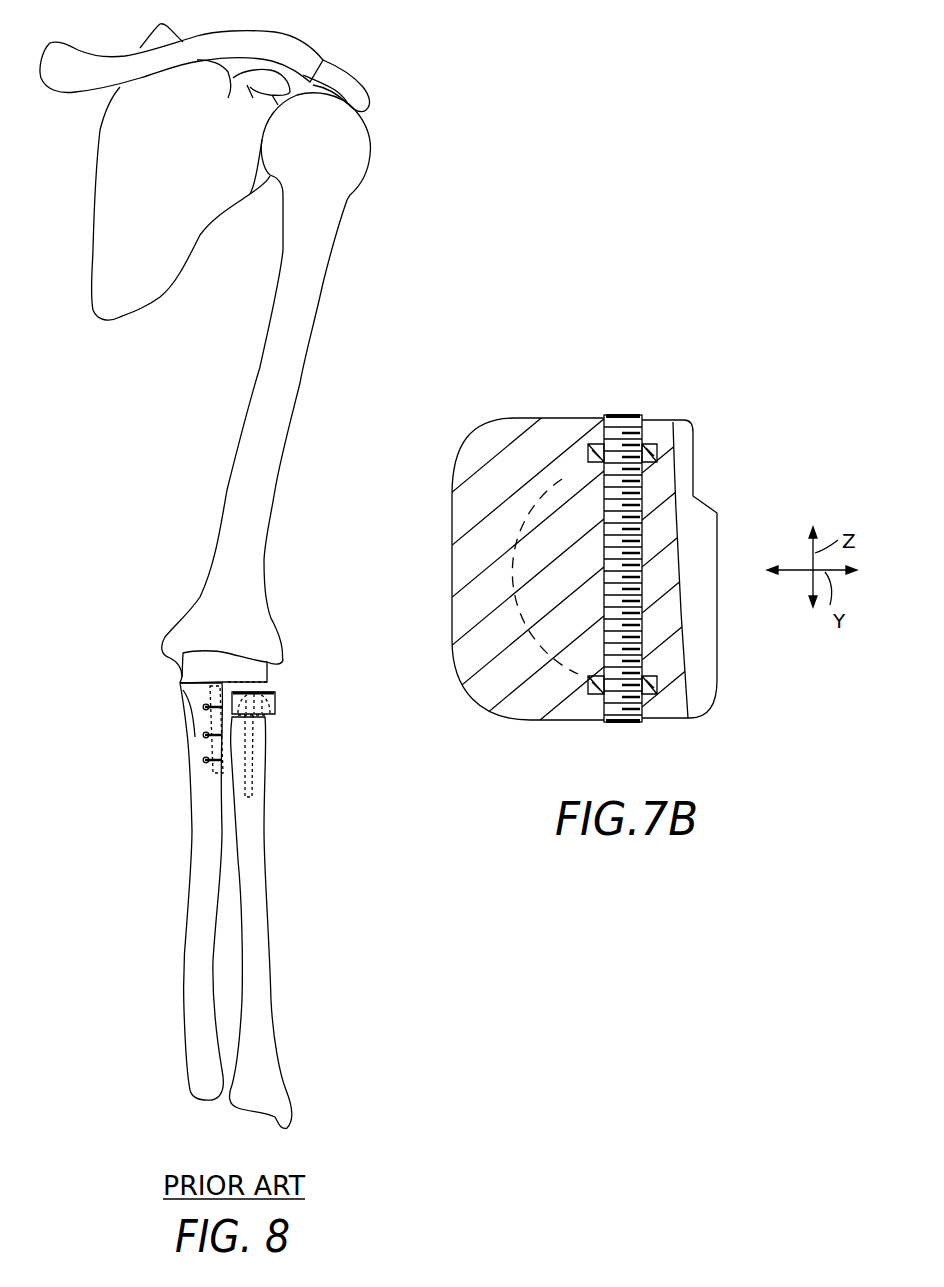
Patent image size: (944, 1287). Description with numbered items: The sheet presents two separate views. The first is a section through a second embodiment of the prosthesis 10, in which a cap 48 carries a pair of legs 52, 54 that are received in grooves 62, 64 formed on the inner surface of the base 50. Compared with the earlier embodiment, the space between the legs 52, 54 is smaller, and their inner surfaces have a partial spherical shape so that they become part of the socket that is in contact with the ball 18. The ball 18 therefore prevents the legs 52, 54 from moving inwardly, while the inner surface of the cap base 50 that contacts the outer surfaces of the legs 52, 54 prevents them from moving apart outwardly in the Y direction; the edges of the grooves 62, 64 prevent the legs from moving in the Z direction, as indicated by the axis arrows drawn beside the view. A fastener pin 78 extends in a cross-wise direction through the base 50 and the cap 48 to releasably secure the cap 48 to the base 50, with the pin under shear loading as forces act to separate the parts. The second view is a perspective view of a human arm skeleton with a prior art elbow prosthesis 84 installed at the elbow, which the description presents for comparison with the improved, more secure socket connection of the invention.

In FIG. 7B, the prosthesis 10 is at (654, 355).
In FIG. 7B, the cap 48 is at (599, 447).
In FIG. 7B, the cap base 50 is at (500, 435).
In FIG. 7B, the leg 52 is at (652, 444).
In FIG. 7B, the groove 62 is at (594, 463).
In FIG. 7B, the ball 18 is at (692, 500).
In FIG. 7B, the fastener pin 78 is at (634, 553).
In FIG. 7B, the groove 64 is at (597, 694).
In FIG. 7B, the leg 54 is at (655, 696).
In FIG. 8, the prior art elbow prosthesis 84 is at (287, 687).